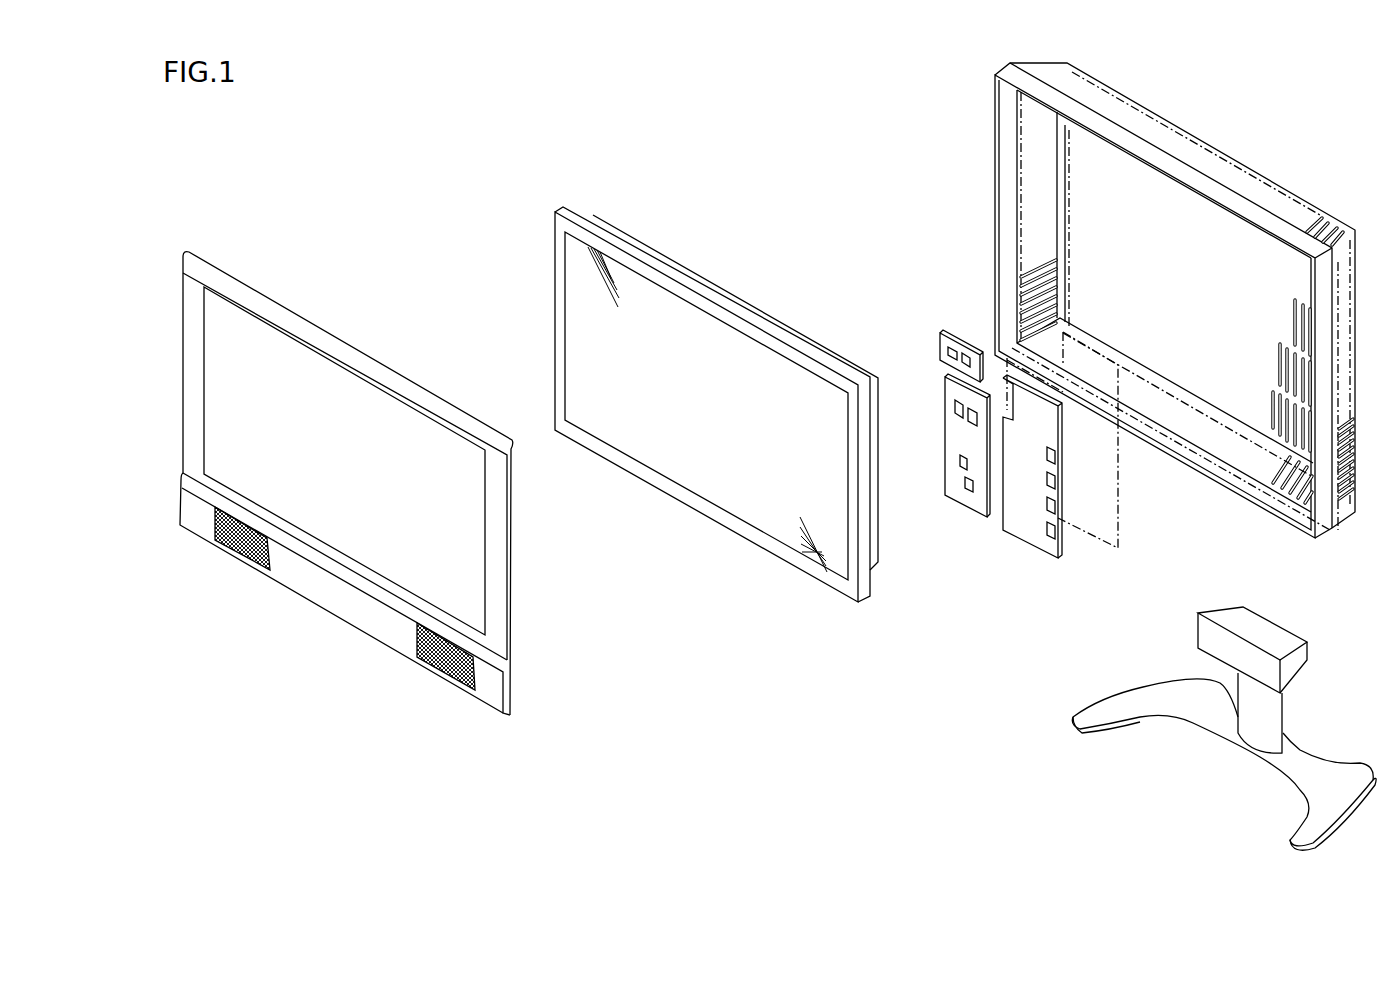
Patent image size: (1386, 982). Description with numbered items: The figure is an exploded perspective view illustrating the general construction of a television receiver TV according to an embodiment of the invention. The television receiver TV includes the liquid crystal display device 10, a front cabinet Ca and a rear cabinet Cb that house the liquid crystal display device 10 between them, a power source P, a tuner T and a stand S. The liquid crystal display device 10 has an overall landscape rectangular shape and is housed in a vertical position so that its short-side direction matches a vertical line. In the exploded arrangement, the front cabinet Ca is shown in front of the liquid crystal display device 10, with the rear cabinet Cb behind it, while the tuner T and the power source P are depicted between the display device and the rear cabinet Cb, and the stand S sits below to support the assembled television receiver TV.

The television receiver TV is at (741, 139).
The front cabinet Ca is at (328, 330).
The liquid crystal display device 10 is at (663, 253).
The rear cabinet Cb is at (1168, 138).
The tuner T is at (958, 502).
The power source P is at (1025, 540).
The stand S is at (1138, 722).